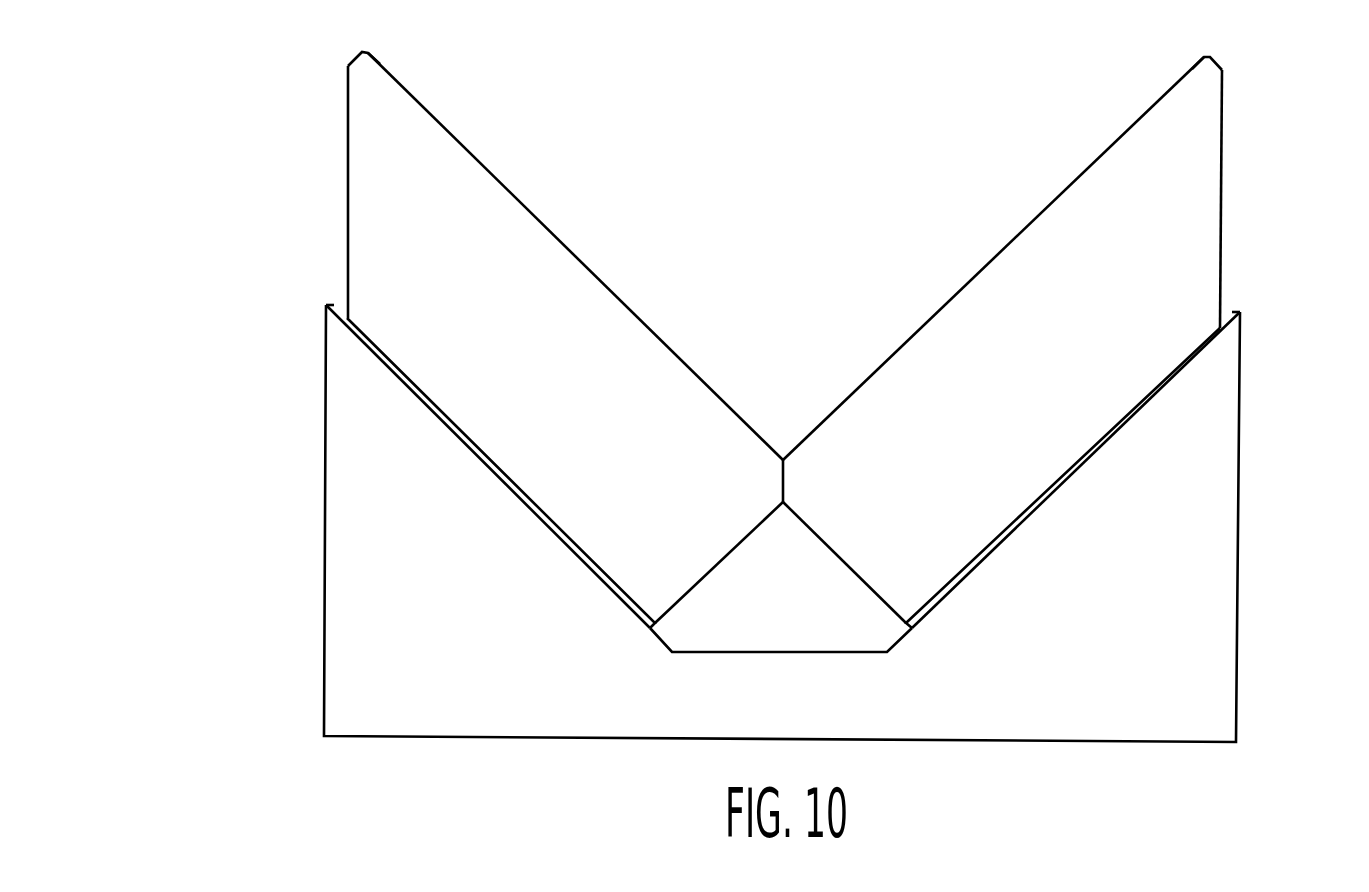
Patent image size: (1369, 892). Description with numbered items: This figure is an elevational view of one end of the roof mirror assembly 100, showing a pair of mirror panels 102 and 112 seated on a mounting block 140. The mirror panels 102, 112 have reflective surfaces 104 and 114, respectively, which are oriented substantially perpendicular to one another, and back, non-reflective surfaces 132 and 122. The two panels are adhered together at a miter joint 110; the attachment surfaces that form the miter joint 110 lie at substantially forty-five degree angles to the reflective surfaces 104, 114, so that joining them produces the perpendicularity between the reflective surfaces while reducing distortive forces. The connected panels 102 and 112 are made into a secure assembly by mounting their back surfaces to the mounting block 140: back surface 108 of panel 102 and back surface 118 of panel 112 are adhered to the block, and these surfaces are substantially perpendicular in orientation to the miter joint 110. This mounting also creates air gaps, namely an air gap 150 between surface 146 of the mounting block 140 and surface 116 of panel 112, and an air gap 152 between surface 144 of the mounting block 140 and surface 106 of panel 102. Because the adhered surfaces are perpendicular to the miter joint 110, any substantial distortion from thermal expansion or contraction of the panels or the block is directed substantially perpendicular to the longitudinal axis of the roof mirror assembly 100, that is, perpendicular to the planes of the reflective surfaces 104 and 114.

The roof mirror assembly 100 is at (585, 52).
The mirror panel 102 is at (1225, 175).
The reflective surface 104 is at (924, 322).
The surface 106 is at (1052, 486).
The back surface 108 is at (1024, 502).
The miter joint 110 is at (786, 449).
The mirror panel 112 is at (346, 174).
The reflective surface 114 is at (645, 320).
The surface 116 is at (509, 485).
The back surface 118 is at (539, 505).
The back, non-reflective surface 122 is at (348, 90).
The back, non-reflective surface 132 is at (1222, 98).
The mounting block 140 is at (352, 565).
The surface 144 is at (1131, 411).
The surface 146 is at (433, 403).
The air gap 150 is at (336, 303).
The air gap 152 is at (1226, 315).